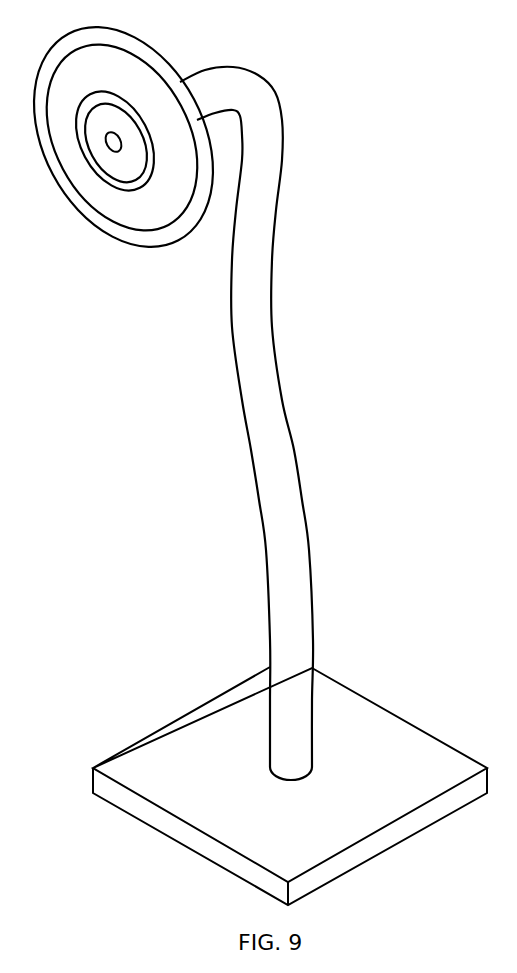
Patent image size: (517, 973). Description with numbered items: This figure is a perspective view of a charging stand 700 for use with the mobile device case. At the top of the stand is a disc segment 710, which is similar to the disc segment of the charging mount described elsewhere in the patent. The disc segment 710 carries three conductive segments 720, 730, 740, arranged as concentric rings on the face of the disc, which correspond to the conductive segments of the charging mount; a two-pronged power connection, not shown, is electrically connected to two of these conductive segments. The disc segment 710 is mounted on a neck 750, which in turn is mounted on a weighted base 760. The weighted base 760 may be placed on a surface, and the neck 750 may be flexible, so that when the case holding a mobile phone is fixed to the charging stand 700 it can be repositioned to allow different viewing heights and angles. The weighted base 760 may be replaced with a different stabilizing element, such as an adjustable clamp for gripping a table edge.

The charging stand 700 is at (368, 118).
The disc segment 710 is at (80, 217).
The conductive segment 720 is at (115, 152).
The conductive segment 730 is at (134, 190).
The conductive segment 740 is at (163, 242).
The neck 750 is at (274, 327).
The weighted base 760 is at (367, 725).